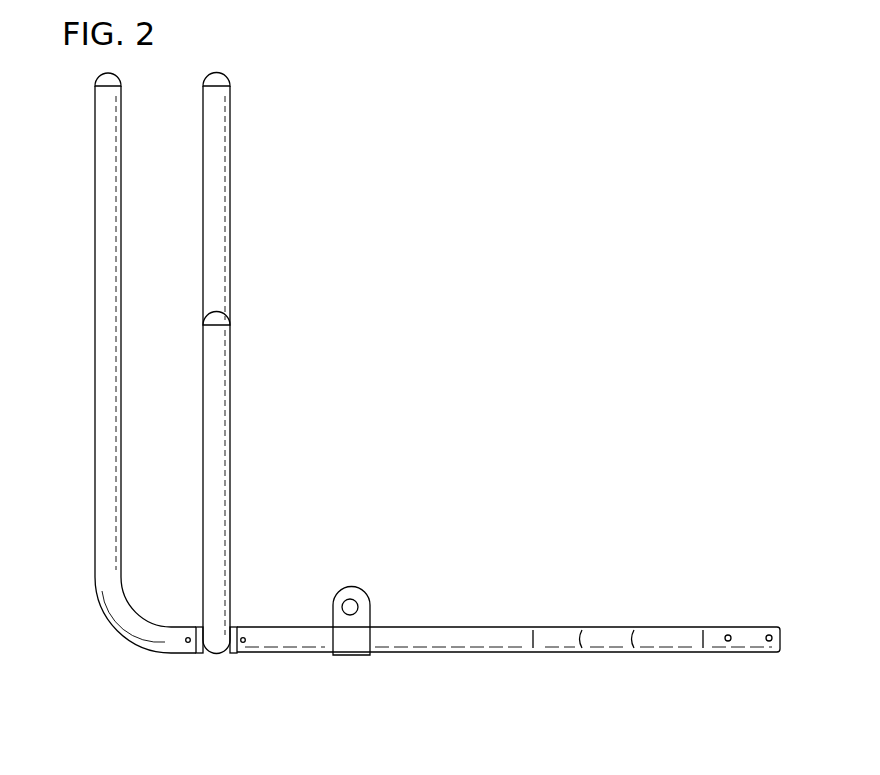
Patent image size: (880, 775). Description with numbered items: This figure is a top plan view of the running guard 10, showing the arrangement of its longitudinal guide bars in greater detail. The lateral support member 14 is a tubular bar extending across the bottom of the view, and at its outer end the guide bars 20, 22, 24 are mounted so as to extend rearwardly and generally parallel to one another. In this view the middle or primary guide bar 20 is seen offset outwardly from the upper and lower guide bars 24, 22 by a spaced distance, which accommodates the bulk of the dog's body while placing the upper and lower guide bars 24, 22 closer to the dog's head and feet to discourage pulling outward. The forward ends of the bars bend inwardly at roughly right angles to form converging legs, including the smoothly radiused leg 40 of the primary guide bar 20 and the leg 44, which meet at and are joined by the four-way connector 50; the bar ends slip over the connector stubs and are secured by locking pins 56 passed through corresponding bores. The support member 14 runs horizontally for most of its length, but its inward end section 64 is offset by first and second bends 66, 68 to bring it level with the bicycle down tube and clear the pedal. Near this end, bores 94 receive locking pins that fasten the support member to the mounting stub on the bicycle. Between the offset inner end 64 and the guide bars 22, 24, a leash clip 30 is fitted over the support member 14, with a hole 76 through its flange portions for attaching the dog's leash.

The running guard 10 is at (418, 180).
The lateral support member 14 is at (448, 644).
The primary guide bar 20 is at (103, 186).
The lower guide bar 22 is at (218, 195).
The upper guide bar 24 is at (222, 408).
The leash clip 30 is at (355, 650).
The converging leg 40 is at (130, 627).
The converging leg 44 is at (219, 653).
The 4-way connector 50 is at (200, 654).
The locking pins 56 is at (186, 642).
The inward end section 64 is at (748, 651).
The first bend 66 is at (556, 635).
The second bend 68 is at (668, 637).
The hole 76 is at (356, 605).
The bores 94 is at (768, 635).